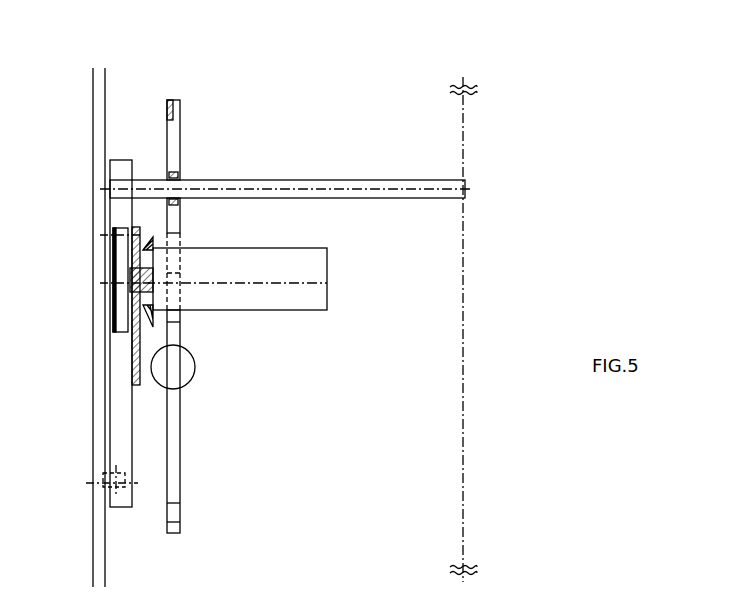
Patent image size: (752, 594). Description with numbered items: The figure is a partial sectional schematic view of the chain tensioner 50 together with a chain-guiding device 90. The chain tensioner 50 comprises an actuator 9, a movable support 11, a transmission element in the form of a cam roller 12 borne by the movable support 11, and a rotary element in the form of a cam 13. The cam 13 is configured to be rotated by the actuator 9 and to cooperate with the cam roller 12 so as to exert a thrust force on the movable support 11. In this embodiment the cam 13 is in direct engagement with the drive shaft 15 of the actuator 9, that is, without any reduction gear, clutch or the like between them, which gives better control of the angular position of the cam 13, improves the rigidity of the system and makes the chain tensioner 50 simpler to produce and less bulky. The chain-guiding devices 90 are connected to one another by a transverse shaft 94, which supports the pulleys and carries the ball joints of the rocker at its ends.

The chain tensioner 50 is at (131, 83).
The movable support 11 is at (115, 425).
The cam roller 12 is at (118, 228).
The cam 13 is at (118, 315).
The drive shaft 15 is at (138, 388).
The actuator 9 is at (243, 295).
The chain-guiding device 90 is at (173, 101).
The transverse shaft 94 is at (252, 188).